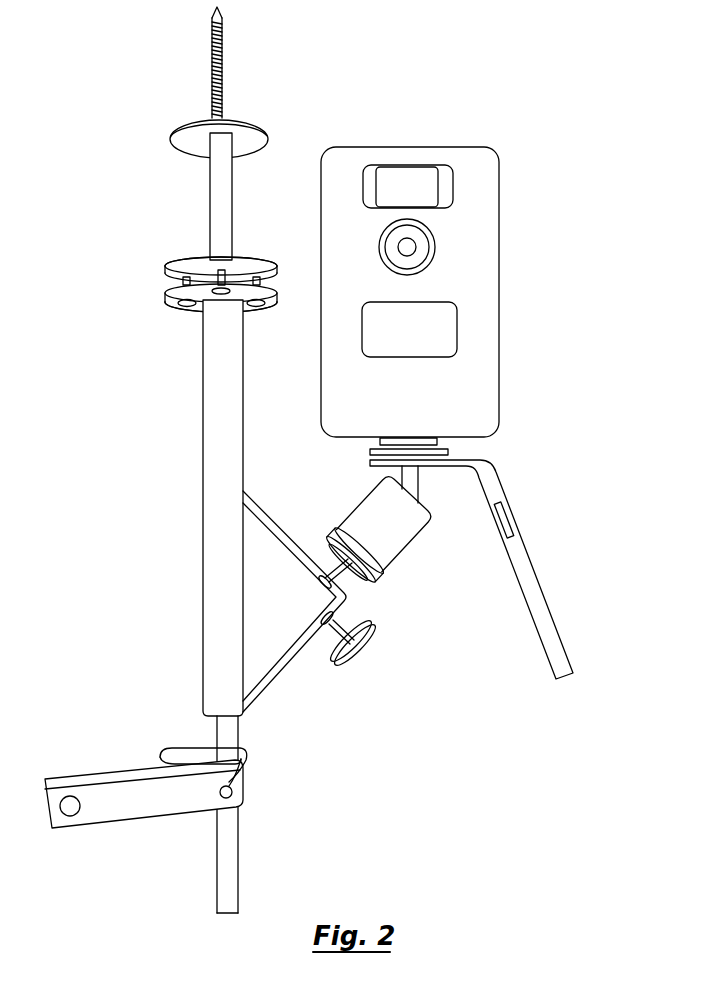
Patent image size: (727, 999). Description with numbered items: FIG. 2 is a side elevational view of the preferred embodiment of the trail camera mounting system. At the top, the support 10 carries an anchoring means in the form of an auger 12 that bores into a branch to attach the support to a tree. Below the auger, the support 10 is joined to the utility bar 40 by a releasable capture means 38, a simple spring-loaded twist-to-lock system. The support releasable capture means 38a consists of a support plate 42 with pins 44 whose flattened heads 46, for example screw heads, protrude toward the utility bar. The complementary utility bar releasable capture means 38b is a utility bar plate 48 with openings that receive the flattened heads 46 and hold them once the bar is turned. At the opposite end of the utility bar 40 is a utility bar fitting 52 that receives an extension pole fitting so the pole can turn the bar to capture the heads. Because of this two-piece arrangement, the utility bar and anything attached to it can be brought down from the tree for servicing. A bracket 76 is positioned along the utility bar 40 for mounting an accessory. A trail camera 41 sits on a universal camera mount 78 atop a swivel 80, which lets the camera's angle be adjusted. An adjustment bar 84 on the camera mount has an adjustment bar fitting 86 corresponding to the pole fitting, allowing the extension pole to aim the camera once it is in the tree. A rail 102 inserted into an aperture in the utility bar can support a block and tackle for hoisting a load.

The auger 12 is at (223, 66).
The support 10 is at (211, 193).
The releasable capture means 38 is at (252, 232).
The support releasable capture means 38a is at (240, 259).
The utility bar releasable capture means 38b is at (234, 356).
The support plate 42 is at (176, 272).
The pins 44 is at (182, 282).
The utility bar plate 48 is at (173, 294).
The flattened heads 46 is at (186, 307).
The utility bar 40 is at (218, 476).
The trail camera 41 is at (482, 312).
The universal camera mount 78 is at (470, 443).
The adjustment bar 84 is at (500, 493).
The adjustment bar fitting 86 is at (535, 594).
The swivel 80 is at (408, 528).
The bracket 76 is at (282, 663).
The rail 102 is at (103, 796).
The utility bar fitting 52 is at (225, 881).